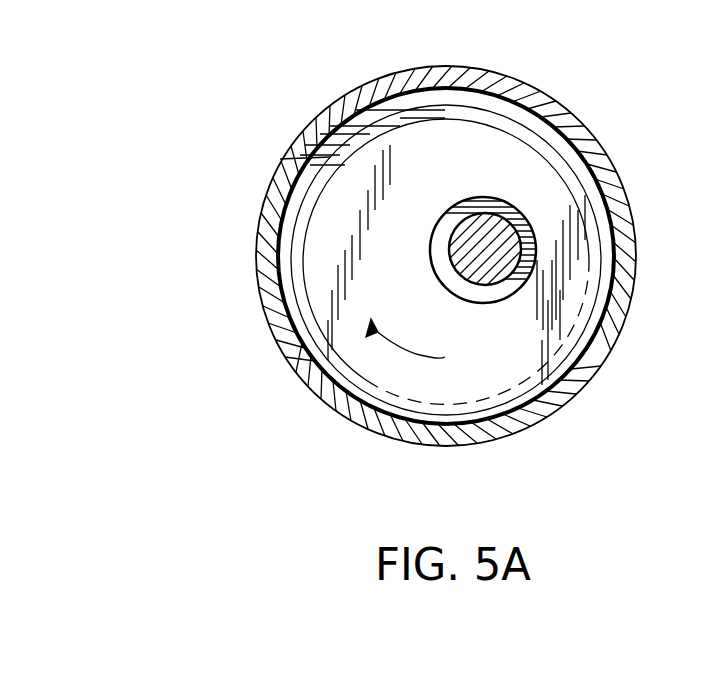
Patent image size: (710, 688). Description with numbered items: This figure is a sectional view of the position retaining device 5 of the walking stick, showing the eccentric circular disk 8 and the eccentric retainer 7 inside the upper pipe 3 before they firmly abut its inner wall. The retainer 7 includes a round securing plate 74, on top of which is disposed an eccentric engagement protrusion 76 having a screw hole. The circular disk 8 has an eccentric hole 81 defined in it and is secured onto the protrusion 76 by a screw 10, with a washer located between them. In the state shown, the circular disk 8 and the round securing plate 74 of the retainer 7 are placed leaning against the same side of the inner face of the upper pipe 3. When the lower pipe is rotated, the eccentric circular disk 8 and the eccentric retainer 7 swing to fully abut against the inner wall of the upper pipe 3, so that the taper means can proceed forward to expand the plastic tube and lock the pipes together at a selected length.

The upper pipe 3 is at (612, 350).
The position retaining device 5 is at (588, 188).
The retainer 7 is at (330, 157).
The round securing plate 74 is at (280, 159).
The circular disk 8 is at (375, 372).
The eccentric engagement protrusion 76 is at (473, 198).
The eccentric hole 81 is at (442, 268).
The screw 10 is at (498, 268).